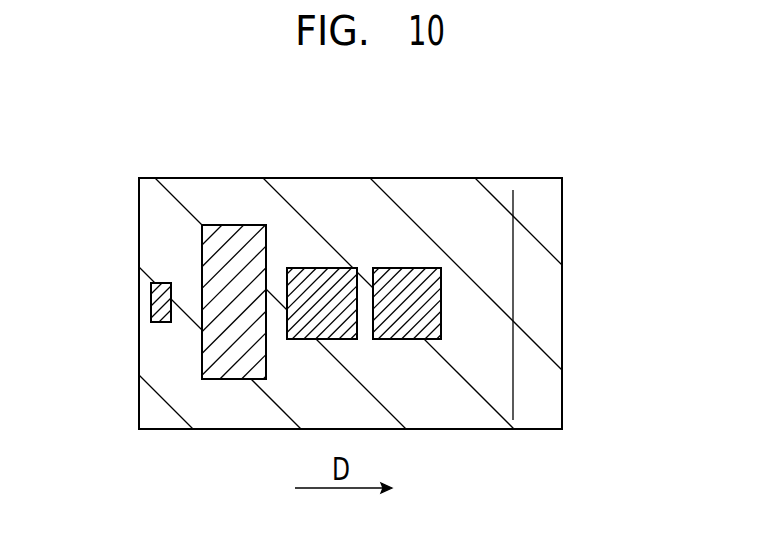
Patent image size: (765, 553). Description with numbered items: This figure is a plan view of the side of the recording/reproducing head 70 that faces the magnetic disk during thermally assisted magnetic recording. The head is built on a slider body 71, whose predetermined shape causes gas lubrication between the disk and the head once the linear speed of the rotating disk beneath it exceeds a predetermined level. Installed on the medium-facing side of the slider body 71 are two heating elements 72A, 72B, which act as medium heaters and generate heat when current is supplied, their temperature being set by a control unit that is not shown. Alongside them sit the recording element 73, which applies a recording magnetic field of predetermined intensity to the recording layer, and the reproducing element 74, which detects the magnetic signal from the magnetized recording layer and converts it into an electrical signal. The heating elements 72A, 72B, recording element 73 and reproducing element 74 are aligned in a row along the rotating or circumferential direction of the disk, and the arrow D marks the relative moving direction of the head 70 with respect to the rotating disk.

The recording/reproducing head 70 is at (138, 222).
The slider body 71 is at (547, 205).
The heating element 72A is at (390, 323).
The heating element 72B is at (335, 282).
The recording element 73 is at (228, 362).
The reproducing element 74 is at (160, 323).